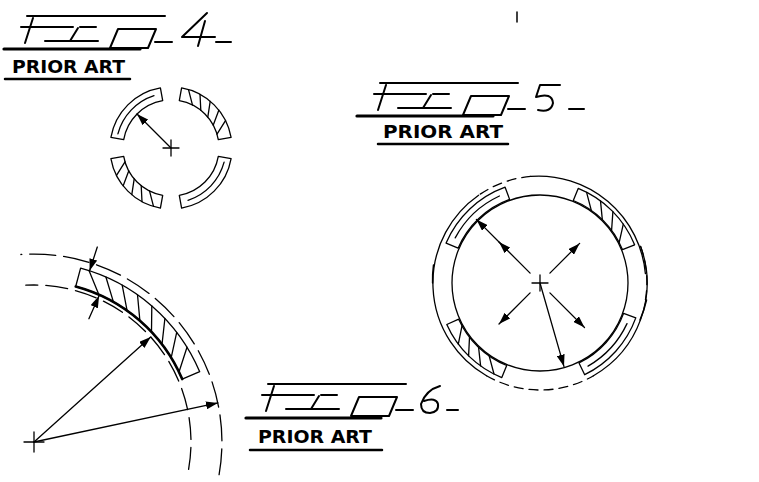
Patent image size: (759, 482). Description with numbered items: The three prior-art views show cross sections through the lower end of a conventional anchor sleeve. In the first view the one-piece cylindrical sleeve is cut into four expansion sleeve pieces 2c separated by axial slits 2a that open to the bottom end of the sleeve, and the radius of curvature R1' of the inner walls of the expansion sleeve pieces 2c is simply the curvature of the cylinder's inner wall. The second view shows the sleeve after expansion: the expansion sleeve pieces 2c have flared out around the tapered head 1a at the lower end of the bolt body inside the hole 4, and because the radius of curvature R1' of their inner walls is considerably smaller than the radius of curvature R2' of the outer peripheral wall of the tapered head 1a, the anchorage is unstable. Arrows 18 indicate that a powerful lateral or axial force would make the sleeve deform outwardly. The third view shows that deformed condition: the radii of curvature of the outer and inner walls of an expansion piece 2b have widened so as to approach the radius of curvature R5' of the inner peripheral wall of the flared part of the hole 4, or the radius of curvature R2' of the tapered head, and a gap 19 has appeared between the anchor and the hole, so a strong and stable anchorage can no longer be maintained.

In FIG. 4, the slits 2a is at (232, 142).
In FIG. 4, the expansion sleeve pieces 2c is at (165, 203).
In FIG. 5, the expansion sleeve pieces 2c is at (615, 211).
In FIG. 6, the arc-shaped magnet segment 2b is at (181, 345).
In FIG. 5, the tapered head 1a is at (462, 283).
In FIG. 5, the hole 4 is at (636, 306).
In FIG. 5, the arrows 18 is at (558, 264).
In FIG. 6, the gap 19 is at (82, 291).
In FIG. 4, the radius of curvature of the inner walls of the expansion sleeve pieces R1' is at (111, 139).
In FIG. 5, the radius of curvature of the inner walls of the expansion sleeve pieces R1' is at (462, 246).
In FIG. 5, the radius of curvature of the outer peripheral wall of the tapered head R2' is at (553, 352).
In FIG. 6, the radius of curvature of the outer peripheral wall of the tapered head R2' is at (92, 389).
In FIG. 6, the radius of curvature of the inner peripheral wall of the flared part of the hole R5' is at (126, 431).